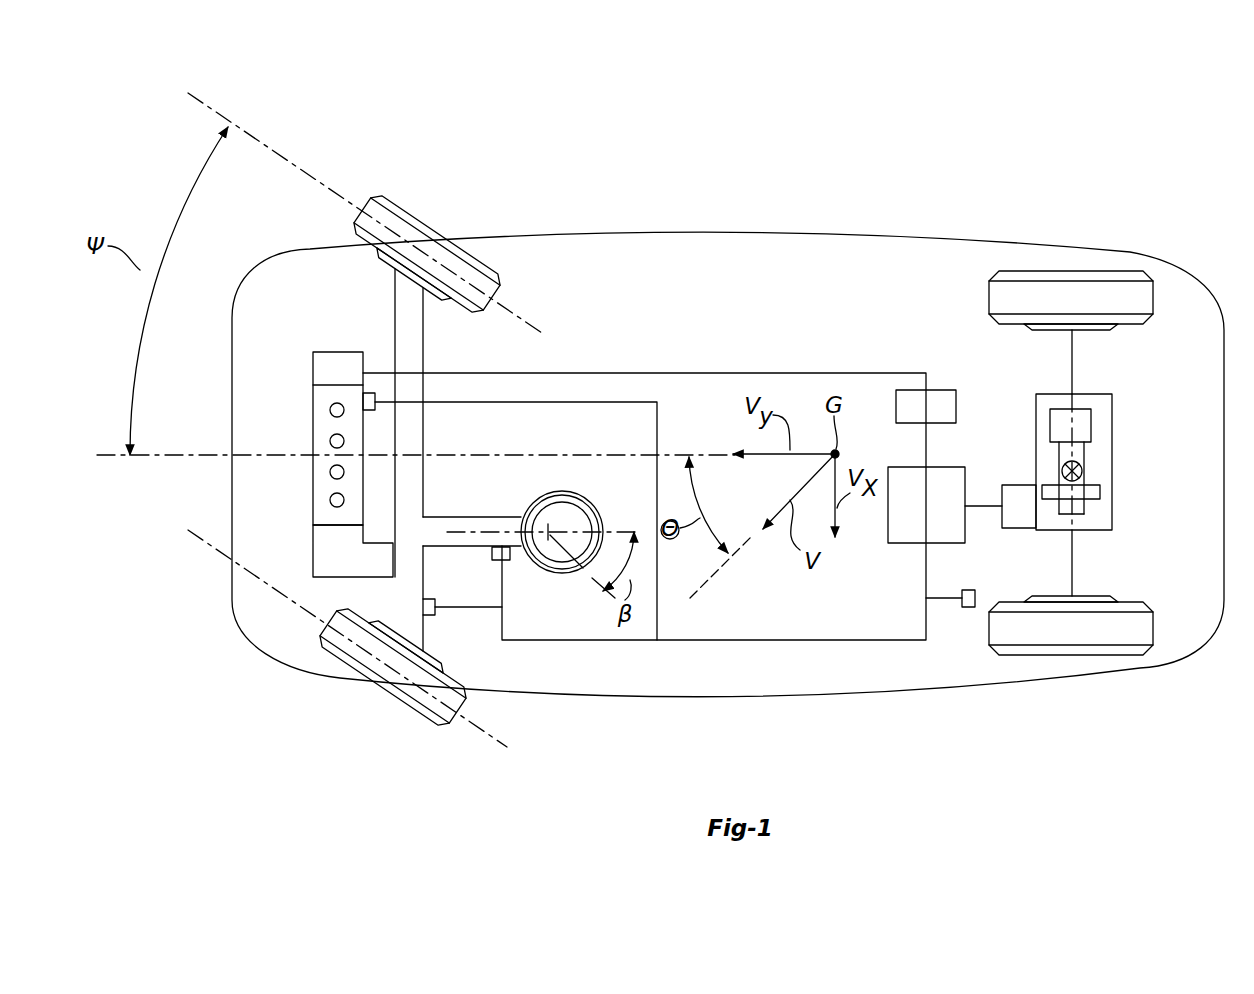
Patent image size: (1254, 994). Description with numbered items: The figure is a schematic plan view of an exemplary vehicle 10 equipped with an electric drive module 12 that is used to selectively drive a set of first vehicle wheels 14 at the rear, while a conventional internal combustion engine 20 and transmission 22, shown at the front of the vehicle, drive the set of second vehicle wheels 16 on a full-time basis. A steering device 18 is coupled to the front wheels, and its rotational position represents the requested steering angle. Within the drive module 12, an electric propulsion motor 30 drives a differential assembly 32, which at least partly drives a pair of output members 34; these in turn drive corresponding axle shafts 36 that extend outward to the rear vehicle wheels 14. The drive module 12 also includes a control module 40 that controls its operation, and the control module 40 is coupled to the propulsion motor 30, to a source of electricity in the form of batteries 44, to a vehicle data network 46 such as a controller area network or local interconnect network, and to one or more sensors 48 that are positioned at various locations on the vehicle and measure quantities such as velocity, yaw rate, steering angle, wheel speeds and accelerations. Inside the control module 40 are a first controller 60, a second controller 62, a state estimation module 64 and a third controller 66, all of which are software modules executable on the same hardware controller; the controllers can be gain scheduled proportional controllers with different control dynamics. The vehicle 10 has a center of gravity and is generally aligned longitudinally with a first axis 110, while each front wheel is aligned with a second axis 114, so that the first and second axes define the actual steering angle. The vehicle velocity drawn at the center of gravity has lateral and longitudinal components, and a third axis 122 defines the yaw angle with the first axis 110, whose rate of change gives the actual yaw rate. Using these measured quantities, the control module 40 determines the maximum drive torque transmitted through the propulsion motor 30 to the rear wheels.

The vehicle 10 is at (691, 147).
The electric drive module 12 is at (1116, 459).
The first vehicle wheels 14 is at (989, 290).
The second vehicle wheels 16 is at (400, 205).
The steering device 18 is at (527, 505).
The internal combustion engine 20 is at (313, 393).
The transmission 22 is at (313, 548).
The electric propulsion motor 30 is at (1007, 495).
The differential assembly 32 is at (1083, 471).
The output members 34 is at (1080, 420).
The axle shafts 36 is at (1073, 357).
The control module 40 is at (915, 547).
The batteries 44 is at (930, 390).
The vehicle data network 46 is at (822, 640).
The sensors 48 is at (380, 410).
The first controller 60 is at (945, 535).
The second controller 62 is at (918, 478).
The state estimation module 64 is at (945, 480).
The third controller 66 is at (955, 507).
The first axis 110 is at (165, 460).
The second axis 114 is at (215, 110).
The third axis 122 is at (752, 563).